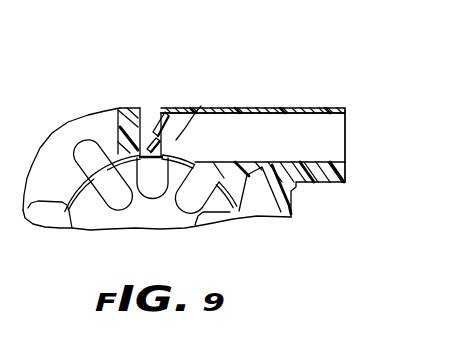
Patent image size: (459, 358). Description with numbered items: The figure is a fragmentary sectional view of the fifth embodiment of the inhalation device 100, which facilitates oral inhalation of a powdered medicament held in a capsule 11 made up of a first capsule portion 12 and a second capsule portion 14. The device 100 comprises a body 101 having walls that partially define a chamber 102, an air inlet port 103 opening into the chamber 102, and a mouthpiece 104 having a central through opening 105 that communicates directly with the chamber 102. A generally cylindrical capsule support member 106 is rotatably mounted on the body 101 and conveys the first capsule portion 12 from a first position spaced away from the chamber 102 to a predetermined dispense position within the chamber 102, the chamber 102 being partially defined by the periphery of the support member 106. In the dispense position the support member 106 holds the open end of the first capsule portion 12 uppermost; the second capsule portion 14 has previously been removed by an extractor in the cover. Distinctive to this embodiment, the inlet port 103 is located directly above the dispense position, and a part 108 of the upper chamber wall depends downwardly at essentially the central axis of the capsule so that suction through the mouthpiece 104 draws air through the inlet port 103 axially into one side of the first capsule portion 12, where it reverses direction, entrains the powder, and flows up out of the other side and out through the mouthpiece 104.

The capsule 11 is at (72, 153).
The second capsule portion 14 is at (81, 147).
The first capsule portion 12 is at (151, 194).
The capsule support member 106 is at (175, 220).
The part of the upper wall of the chamber 108 is at (155, 127).
The air inlet port 103 is at (145, 125).
The mouthpiece 104 is at (313, 107).
The device 100 is at (194, 107).
The chamber 102 is at (201, 106).
The central through opening 105 is at (340, 148).
The body 101 is at (291, 218).